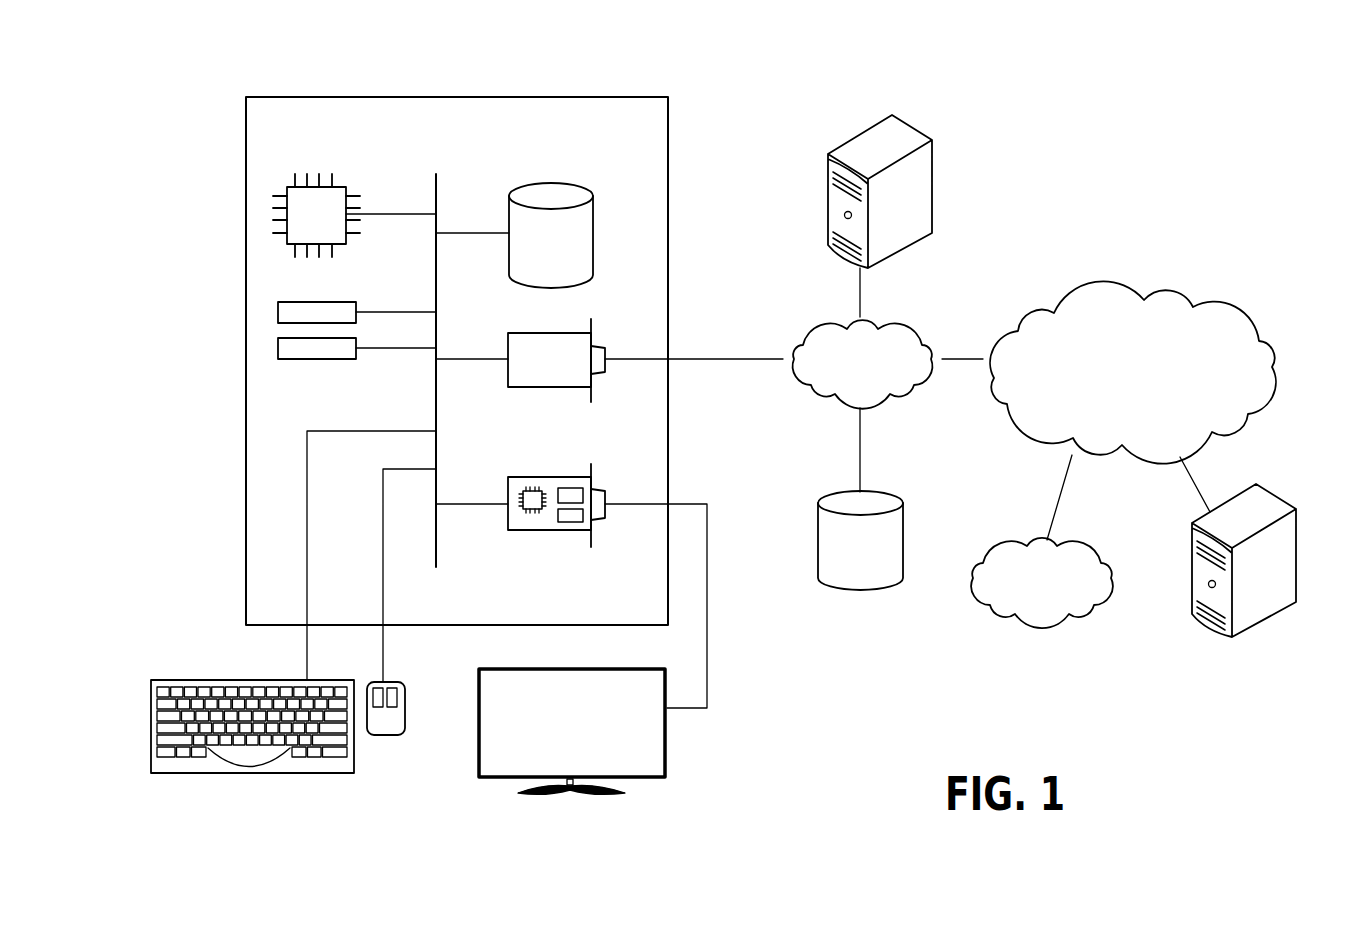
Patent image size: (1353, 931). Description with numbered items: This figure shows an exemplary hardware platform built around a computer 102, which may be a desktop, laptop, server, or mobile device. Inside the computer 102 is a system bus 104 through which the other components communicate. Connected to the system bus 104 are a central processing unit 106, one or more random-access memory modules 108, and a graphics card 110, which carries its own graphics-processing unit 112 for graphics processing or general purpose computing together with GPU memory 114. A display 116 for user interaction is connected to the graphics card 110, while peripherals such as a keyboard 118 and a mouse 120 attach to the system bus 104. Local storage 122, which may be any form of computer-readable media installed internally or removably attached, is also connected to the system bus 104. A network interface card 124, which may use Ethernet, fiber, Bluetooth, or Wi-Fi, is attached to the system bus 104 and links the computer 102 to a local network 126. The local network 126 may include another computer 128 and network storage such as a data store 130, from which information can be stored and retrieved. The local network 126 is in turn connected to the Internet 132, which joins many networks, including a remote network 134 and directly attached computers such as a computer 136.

The computer 102 is at (622, 97).
The system bus 104 is at (437, 185).
The central processing unit 106 is at (340, 180).
The random-access memory modules 108 is at (357, 309).
The graphics card 110 is at (508, 484).
The graphics-processing unit 112 is at (530, 512).
The GPU memory 114 is at (567, 523).
The display 116 is at (667, 760).
The keyboard 118 is at (257, 773).
The mouse 120 is at (383, 735).
The local storage 122 is at (598, 217).
The network interface card 124 is at (508, 339).
The local network 126 is at (912, 317).
The computer 128 is at (915, 123).
The data store 130 is at (893, 492).
The Internet 132 is at (1180, 280).
The remote network 134 is at (1097, 537).
The computer 136 is at (1270, 490).